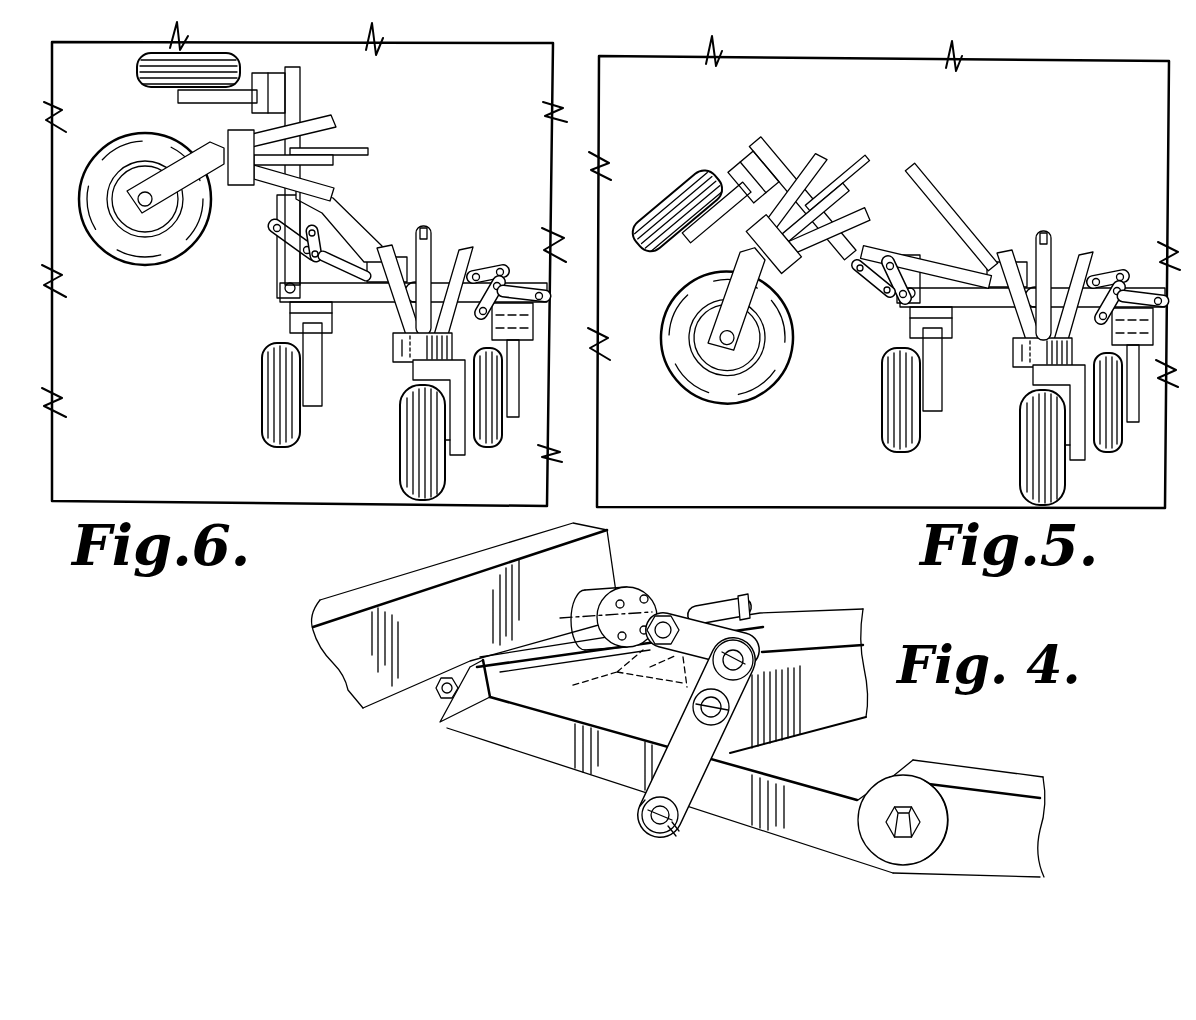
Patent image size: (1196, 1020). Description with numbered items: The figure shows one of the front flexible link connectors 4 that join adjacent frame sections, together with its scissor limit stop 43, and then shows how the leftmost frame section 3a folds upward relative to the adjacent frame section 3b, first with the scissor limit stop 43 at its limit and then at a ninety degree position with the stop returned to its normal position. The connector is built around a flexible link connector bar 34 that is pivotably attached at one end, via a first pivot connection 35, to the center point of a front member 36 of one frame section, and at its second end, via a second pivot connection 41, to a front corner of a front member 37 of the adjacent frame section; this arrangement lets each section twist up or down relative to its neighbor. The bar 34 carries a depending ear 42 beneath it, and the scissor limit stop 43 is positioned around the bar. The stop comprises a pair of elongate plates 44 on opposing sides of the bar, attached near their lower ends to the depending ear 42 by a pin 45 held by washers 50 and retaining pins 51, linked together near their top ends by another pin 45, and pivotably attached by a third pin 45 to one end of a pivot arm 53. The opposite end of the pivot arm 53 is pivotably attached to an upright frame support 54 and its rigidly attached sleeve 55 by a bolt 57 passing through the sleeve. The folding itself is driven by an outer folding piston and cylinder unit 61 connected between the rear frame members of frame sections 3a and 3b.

In FIG. 6, the frame section 3a is at (392, 76).
In FIG. 5, the frame section 3a is at (862, 102).
In FIG. 6, the frame section 3b is at (448, 232).
In FIG. 6, the outer folding piston & cylinder unit 61 is at (346, 258).
In FIG. 5, the front member 36 is at (1060, 218).
In FIG. 4, the front member 36 is at (624, 712).
In FIG. 4, the front flexible link connector 4 is at (480, 770).
In FIG. 4, the flexible link connector bar 34 is at (557, 755).
In FIG. 4, the first pivot connection 35 is at (441, 694).
In FIG. 4, the front member 37 is at (994, 838).
In FIG. 4, the second pivot connection 41 is at (890, 822).
In FIG. 4, the depending ear 42 is at (637, 802).
In FIG. 4, the scissor limit stop 43 is at (774, 757).
In FIG. 4, the elongate plates 44 is at (696, 773).
In FIG. 4, the pin 45 is at (742, 658).
In FIG. 4, the washers 50 is at (677, 841).
In FIG. 4, the retaining pins 51 is at (660, 838).
In FIG. 4, the pivot arm 53 is at (692, 608).
In FIG. 4, the upright frame support 54 is at (594, 678).
In FIG. 4, the sleeve 55 is at (720, 604).
In FIG. 4, the bolt 57 is at (750, 604).